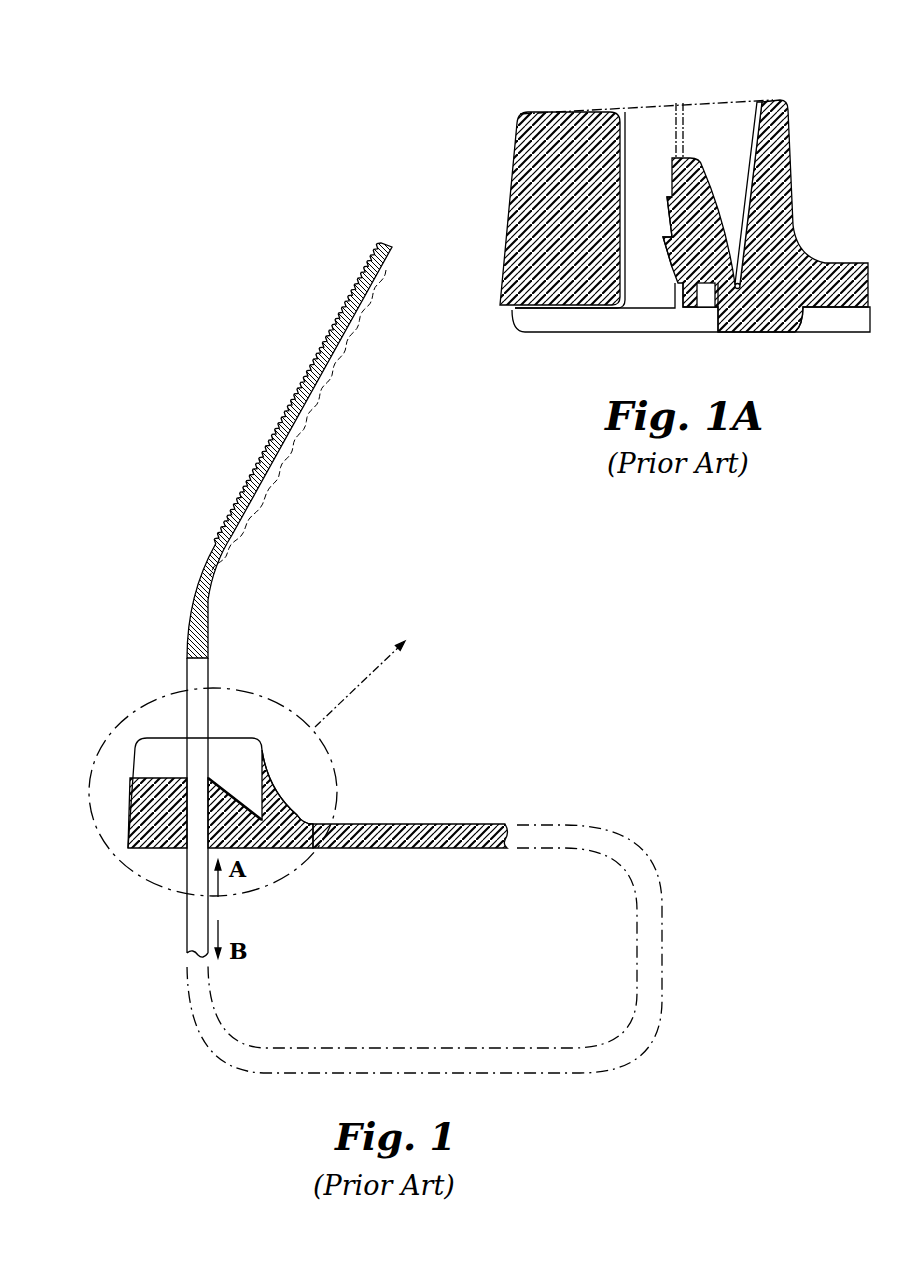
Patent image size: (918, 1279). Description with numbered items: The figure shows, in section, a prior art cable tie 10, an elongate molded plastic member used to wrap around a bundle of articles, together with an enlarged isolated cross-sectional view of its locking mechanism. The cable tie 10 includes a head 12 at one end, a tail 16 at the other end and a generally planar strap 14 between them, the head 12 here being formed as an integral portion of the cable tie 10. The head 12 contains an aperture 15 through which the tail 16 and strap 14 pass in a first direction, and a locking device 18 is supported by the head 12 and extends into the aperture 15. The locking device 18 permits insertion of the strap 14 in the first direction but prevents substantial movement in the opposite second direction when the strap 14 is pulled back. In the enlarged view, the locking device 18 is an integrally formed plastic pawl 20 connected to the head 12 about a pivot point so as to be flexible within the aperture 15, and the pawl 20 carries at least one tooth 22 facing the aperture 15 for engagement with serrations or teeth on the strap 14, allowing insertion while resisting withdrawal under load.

In FIG. 1, the cable tie 10 is at (297, 661).
In FIG. 1A, the head 12 is at (510, 200).
In FIG. 1, the head 12 is at (130, 803).
In FIG. 1, the strap 14 is at (453, 824).
In FIG. 1A, the aperture 15 is at (657, 127).
In FIG. 1, the aperture 15 is at (208, 720).
In FIG. 1, the tail 16 is at (374, 247).
In FIG. 1A, the locking device 18 is at (766, 70).
In FIG. 1, the locking device 18 is at (223, 793).
In FIG. 1A, the pawl 20 is at (710, 240).
In FIG. 1A, the tooth 22 is at (670, 196).